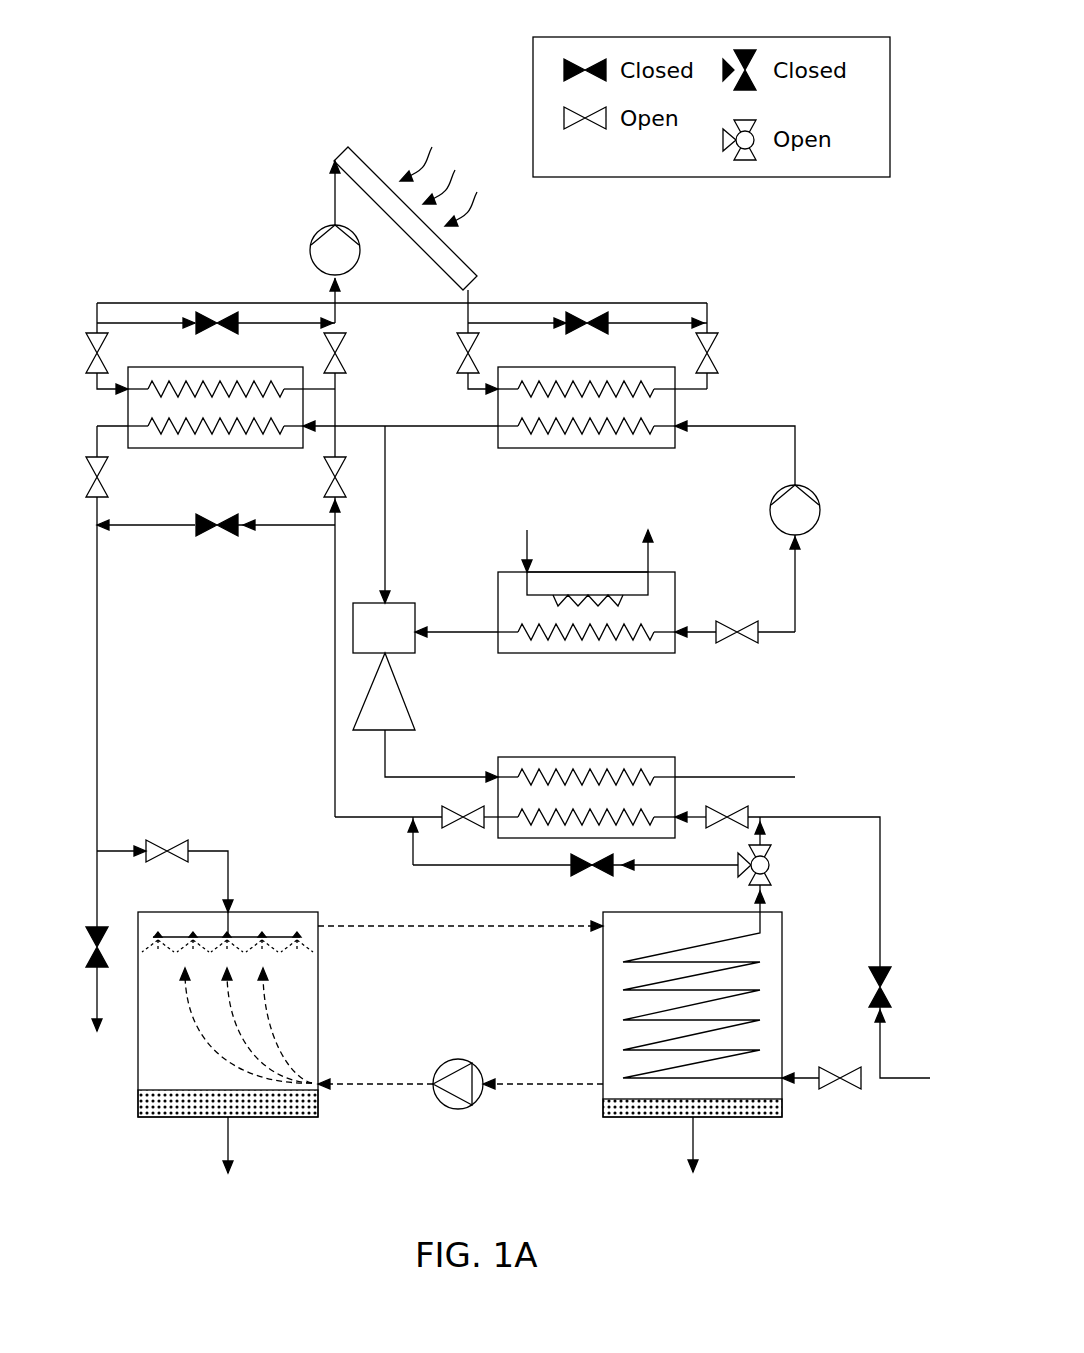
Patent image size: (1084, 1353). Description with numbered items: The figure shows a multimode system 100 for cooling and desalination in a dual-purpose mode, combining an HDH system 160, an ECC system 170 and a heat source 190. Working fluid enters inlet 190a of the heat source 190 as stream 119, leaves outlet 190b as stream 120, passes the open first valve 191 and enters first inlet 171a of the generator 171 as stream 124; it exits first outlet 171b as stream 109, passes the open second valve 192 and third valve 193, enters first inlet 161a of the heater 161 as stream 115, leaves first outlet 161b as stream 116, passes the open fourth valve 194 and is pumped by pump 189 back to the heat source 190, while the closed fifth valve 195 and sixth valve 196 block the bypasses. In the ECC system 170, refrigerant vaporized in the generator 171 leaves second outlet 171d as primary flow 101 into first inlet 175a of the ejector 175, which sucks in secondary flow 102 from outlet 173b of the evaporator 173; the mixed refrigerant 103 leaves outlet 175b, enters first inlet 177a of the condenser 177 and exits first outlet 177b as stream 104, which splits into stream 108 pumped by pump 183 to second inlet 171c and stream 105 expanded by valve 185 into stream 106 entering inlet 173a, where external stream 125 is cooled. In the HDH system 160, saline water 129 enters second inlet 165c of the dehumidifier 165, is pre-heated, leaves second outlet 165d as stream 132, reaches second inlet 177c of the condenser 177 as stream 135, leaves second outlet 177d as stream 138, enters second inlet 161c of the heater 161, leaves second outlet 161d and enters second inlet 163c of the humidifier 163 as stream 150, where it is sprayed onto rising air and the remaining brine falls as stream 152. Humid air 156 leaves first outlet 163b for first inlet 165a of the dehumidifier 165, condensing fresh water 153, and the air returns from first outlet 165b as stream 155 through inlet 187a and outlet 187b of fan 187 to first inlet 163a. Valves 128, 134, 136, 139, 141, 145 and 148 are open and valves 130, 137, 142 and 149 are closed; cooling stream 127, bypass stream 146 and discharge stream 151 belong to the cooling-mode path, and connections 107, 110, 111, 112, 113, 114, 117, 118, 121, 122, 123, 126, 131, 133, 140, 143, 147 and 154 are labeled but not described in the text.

The multimode system 100 is at (226, 156).
The primary flow 101 is at (390, 450).
The secondary flow 102 is at (460, 628).
The mixed refrigerant 103 is at (477, 773).
The stream 104 is at (792, 774).
The stream 105 is at (772, 622).
The stream 106 is at (695, 622).
The fluid line 107 is at (800, 560).
The stream 108 is at (800, 436).
The stream 109 is at (712, 385).
The fluid line 110 is at (712, 312).
The fluid line 111 is at (700, 302).
The fluid line 112 is at (146, 318).
The fluid line 113 is at (266, 318).
The fluid line 114 is at (95, 321).
The stream 115 is at (95, 384).
The stream 116 is at (460, 378).
The fluid line 117 is at (340, 327).
The fluid line 118 is at (362, 266).
The stream 119 is at (332, 196).
The stream 120 is at (470, 300).
The fluid line 121 is at (540, 318).
The fluid line 122 is at (645, 318).
The fluid line 123 is at (462, 320).
The stream 124 is at (462, 382).
The stream 125 is at (524, 538).
The outlet line 126 is at (645, 548).
The cooling stream 127 is at (885, 1050).
The valve 128 is at (855, 1088).
The stream 129 is at (806, 1086).
The valve 130 is at (872, 987).
The fluid line 131 is at (885, 930).
The stream 132 is at (772, 906).
The three-way valve 133 is at (772, 846).
The valve 134 is at (742, 803).
The stream 135 is at (697, 815).
The three-way valve 136 is at (740, 863).
The valve 137 is at (613, 873).
The stream 138 is at (493, 838).
The valve 139 is at (442, 813).
The fluid line 140 is at (328, 796).
The valve 141 is at (347, 487).
The valve 142 is at (230, 540).
The fluid line 143 is at (335, 420).
The valve 145 is at (108, 490).
The stream 146 is at (172, 530).
The fluid line 147 is at (108, 622).
The valve 148 is at (158, 840).
The valve 149 is at (93, 925).
The stream 150 is at (232, 866).
The stream 151 is at (97, 1038).
The stream 152 is at (224, 1150).
The stream 153 is at (690, 1152).
The fluid line 154 is at (545, 1092).
The stream 155 is at (368, 1090).
The stream 156 is at (468, 933).
The HDH system 160 is at (166, 1195).
The heater 161 is at (253, 450).
The first inlet 161a is at (124, 390).
The first outlet 161b is at (292, 384).
The second inlet 161c is at (297, 452).
The second outlet 161d is at (133, 452).
The humidifier 163 is at (320, 1008).
The first inlet 163a is at (320, 1076).
The first outlet 163b is at (320, 916).
The second inlet 163c is at (222, 903).
The dehumidifier 165 is at (602, 1016).
The first inlet 165a is at (600, 924).
The first outlet 165b is at (600, 1082).
The second inlet 165c is at (785, 1072).
The second outlet 165d is at (775, 915).
The ECC system 170 is at (847, 346).
The generator 171 is at (650, 450).
The first inlet 171a is at (507, 385).
The first outlet 171b is at (688, 396).
The second inlet 171c is at (688, 440).
The second outlet 171d is at (497, 436).
The evaporator 173 is at (650, 656).
The inlet 173a is at (660, 638).
The outlet 173b is at (493, 638).
The ejector 175 is at (402, 687).
The first inlet 175a is at (390, 597).
The outlet 175b is at (388, 733).
The condenser 177 is at (603, 756).
The first inlet 177a is at (500, 777).
The first outlet 177b is at (673, 777).
The second inlet 177c is at (678, 812).
The second outlet 177d is at (500, 822).
The pump 183 is at (820, 520).
The valve 185 is at (740, 645).
The fan 187 is at (456, 1059).
The inlet 187a is at (482, 1105).
The outlet 187b is at (437, 1105).
The pump 189 is at (312, 232).
The heat source 190 is at (360, 158).
The inlet 190a is at (338, 158).
The outlet 190b is at (465, 288).
The first valve 191 is at (482, 345).
The second valve 192 is at (718, 345).
The third valve 193 is at (108, 346).
The fourth valve 194 is at (323, 343).
The fifth valve 195 is at (588, 312).
The sixth valve 196 is at (216, 312).